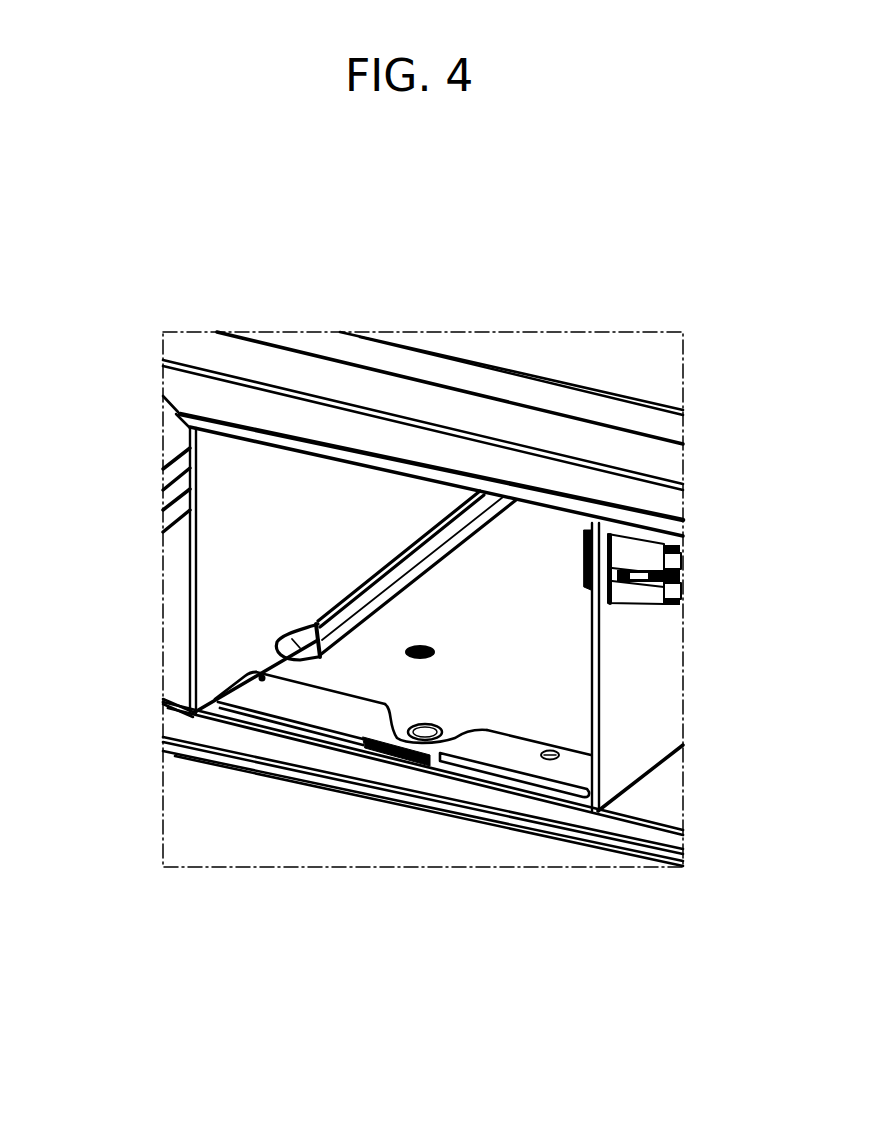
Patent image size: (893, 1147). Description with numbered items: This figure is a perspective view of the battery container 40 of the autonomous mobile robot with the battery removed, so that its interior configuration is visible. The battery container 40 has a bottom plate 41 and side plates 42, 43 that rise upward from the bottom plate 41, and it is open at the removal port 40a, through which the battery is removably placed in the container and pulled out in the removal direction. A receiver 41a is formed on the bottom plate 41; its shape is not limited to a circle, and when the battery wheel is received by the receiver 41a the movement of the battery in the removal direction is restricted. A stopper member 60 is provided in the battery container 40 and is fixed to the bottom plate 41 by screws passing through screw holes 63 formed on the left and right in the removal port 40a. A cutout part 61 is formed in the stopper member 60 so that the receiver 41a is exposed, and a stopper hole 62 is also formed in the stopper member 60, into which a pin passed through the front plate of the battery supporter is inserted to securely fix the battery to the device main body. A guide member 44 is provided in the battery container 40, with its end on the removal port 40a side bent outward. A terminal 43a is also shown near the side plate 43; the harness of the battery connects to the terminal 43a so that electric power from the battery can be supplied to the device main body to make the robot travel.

The battery container 40 is at (243, 507).
The removal port 40a is at (185, 567).
The bottom plate 41 is at (362, 678).
The receiver 41a is at (431, 722).
The side plate 42 is at (232, 626).
The side plate 43 is at (618, 730).
The terminal 43a is at (633, 600).
The guide member 44 is at (300, 646).
The stopper member 60 is at (480, 776).
The cutout part 61 is at (468, 730).
The stopper hole 62 is at (549, 749).
The screw hole 63 is at (262, 675).